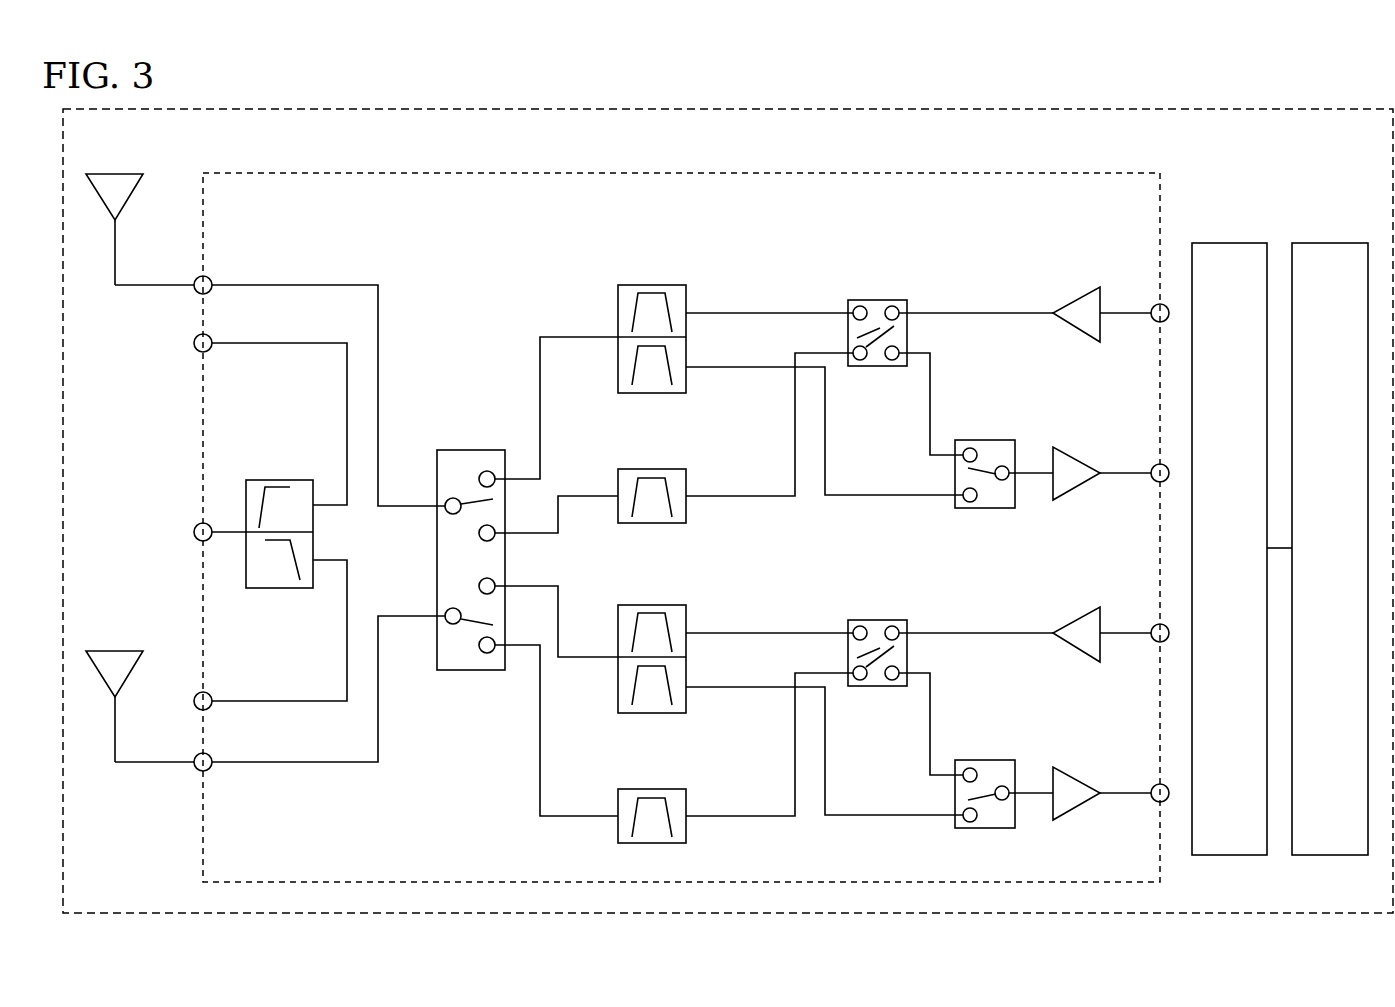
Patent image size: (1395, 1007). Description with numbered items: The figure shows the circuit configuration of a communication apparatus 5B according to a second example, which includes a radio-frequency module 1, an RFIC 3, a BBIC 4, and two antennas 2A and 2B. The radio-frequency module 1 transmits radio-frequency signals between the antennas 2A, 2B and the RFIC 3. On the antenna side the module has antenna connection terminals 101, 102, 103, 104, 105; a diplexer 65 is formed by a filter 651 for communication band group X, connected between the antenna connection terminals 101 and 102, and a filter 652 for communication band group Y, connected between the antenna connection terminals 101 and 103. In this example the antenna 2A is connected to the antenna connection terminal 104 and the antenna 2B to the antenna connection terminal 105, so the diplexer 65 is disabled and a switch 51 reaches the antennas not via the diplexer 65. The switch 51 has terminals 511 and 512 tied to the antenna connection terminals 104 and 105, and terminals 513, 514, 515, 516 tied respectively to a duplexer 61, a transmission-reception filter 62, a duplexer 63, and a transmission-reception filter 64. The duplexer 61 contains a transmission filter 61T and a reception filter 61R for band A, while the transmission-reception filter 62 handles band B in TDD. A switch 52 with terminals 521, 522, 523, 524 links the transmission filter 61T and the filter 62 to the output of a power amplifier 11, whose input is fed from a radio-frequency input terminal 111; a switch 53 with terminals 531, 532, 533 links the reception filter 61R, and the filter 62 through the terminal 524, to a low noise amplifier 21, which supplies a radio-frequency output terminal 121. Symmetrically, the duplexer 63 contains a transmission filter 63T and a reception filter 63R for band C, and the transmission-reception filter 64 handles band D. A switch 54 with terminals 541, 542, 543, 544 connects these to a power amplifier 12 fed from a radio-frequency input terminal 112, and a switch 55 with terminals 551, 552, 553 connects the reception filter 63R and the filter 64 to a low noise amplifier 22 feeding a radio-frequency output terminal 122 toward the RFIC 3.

The communication apparatus 5B is at (1355, 108).
The radio-frequency module 1 is at (1110, 173).
The radio-frequency integrated circuit (RFIC) 3 is at (1230, 243).
The baseband integrated circuit (BBIC) 4 is at (1330, 243).
The antenna 2A is at (115, 173).
The antenna 2B is at (115, 650).
The antenna connection terminal 101 is at (196, 527).
The antenna connection terminal 102 is at (208, 350).
The antenna connection terminal 103 is at (196, 696).
The antenna connection terminal 104 is at (196, 281).
The antenna connection terminal 105 is at (196, 769).
The diplexer 65 is at (275, 510).
The filter 651 is at (280, 480).
The filter 652 is at (280, 589).
The switch 51 is at (473, 557).
The terminal 511 is at (446, 500).
The terminal 512 is at (446, 622).
The terminal 513 is at (489, 470).
The terminal 514 is at (494, 528).
The terminal 515 is at (494, 581).
The terminal 516 is at (487, 654).
The duplexer 61 is at (708, 340).
The transmission filter 61T is at (687, 295).
The reception filter 61R is at (691, 385).
The transmission-reception filter 62 is at (687, 480).
The duplexer 63 is at (708, 660).
The transmission filter 63T is at (687, 615).
The reception filter 63R is at (690, 705).
The transmission-reception filter 64 is at (687, 800).
The switch 52 is at (875, 330).
The terminal 521 is at (854, 304).
The terminal 522 is at (858, 367).
The terminal 523 is at (896, 306).
The terminal 524 is at (893, 367).
The switch 53 is at (999, 472).
The terminal 531 is at (1006, 461).
The terminal 532 is at (965, 447).
The terminal 533 is at (972, 507).
The switch 54 is at (875, 650).
The terminal 541 is at (854, 624).
The terminal 542 is at (858, 687).
The terminal 543 is at (896, 626).
The terminal 544 is at (893, 687).
The switch 55 is at (1000, 792).
The terminal 551 is at (1006, 781).
The terminal 552 is at (965, 767).
The terminal 553 is at (972, 827).
The power amplifier 11 is at (1086, 290).
The power amplifier 12 is at (1086, 614).
The low noise amplifier 21 is at (1075, 490).
The low noise amplifier 22 is at (1075, 810).
The radio-frequency input terminal 111 is at (1153, 305).
The radio-frequency input terminal 112 is at (1153, 625).
The radio-frequency output terminal 121 is at (1153, 465).
The radio-frequency output terminal 122 is at (1153, 785).